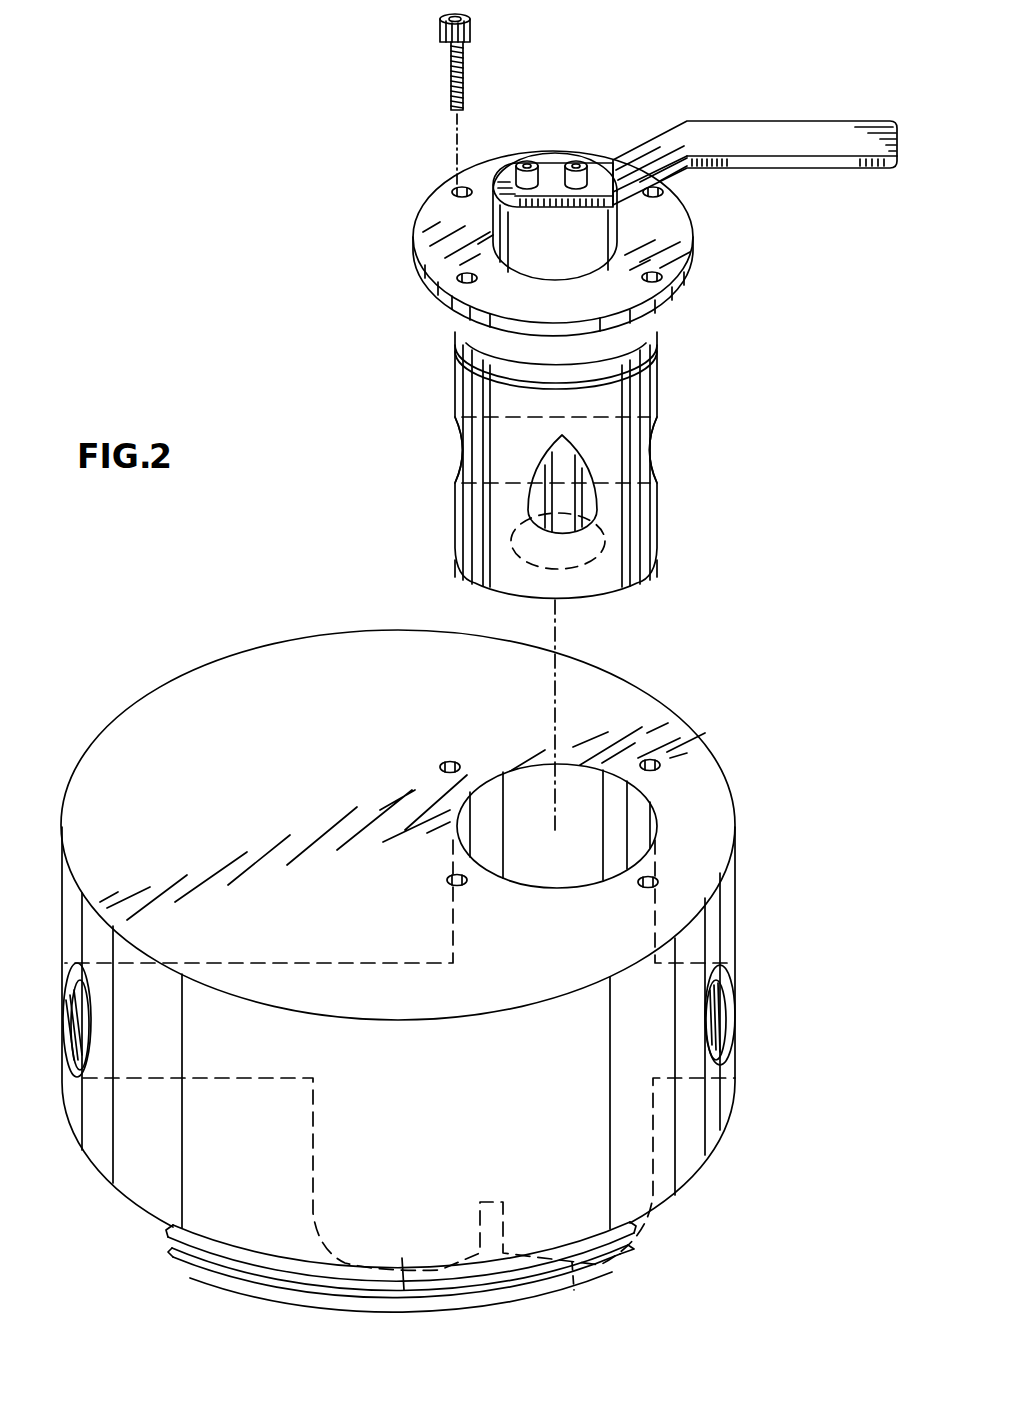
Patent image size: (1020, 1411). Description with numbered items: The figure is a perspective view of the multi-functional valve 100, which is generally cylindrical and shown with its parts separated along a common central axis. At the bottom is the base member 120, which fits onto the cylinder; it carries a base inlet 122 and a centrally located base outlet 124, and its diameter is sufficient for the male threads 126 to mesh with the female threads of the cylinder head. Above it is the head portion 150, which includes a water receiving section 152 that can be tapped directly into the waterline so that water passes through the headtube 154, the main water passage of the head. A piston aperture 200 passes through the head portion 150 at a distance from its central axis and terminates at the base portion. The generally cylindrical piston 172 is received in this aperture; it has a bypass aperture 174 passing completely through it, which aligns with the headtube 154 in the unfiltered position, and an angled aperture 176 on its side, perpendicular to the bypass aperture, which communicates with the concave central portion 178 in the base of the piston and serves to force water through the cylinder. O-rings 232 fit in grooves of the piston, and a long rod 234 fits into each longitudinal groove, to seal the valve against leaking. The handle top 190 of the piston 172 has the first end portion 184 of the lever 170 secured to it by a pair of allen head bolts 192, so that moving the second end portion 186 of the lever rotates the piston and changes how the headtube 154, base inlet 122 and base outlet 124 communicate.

The multi-functional valve 100 is at (176, 178).
The base member 120 is at (168, 1245).
The base inlet 122 is at (572, 1290).
The base outlet 124 is at (402, 1278).
The male threads 126 is at (165, 1228).
The head portion 150 is at (730, 780).
The water receiving section 152 is at (735, 1000).
The headtube 154 is at (735, 1030).
The lever 170 is at (793, 168).
The piston 172 is at (657, 375).
The bypass aperture 174 is at (650, 447).
The angled aperture 176 is at (590, 512).
The concave central portion 178 is at (548, 550).
The first end portion 184 is at (574, 165).
The second end portion 186 is at (866, 113).
The handle top 190 is at (498, 237).
The allen head bolts 192 is at (527, 165).
The piston aperture 200 is at (583, 827).
The o-rings 232 is at (655, 340).
The long rod 234 is at (478, 584).